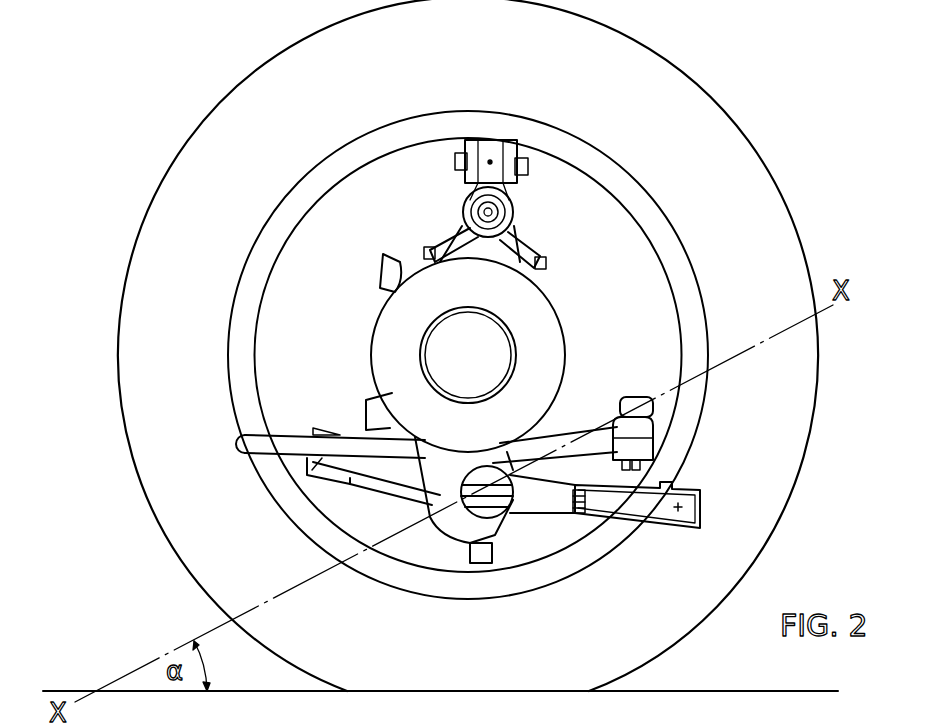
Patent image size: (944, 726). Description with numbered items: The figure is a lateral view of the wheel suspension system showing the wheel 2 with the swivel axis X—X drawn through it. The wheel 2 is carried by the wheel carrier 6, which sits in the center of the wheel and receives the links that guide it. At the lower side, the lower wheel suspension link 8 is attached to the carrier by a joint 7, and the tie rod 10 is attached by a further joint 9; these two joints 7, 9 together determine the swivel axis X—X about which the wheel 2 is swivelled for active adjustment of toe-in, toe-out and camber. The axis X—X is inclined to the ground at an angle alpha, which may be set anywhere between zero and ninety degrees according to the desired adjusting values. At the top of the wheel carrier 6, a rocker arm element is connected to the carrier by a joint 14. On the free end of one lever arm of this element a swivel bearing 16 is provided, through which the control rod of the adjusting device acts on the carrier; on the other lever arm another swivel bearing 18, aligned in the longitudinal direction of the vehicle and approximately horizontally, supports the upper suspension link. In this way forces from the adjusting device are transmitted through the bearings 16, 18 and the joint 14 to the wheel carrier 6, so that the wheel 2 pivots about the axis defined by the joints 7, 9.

The wheel 2 is at (702, 118).
The wheel carrier 6 is at (520, 230).
The joint of the lower wheel suspension link 7 is at (494, 535).
The lower wheel suspension link 8 is at (620, 500).
The joint of the tie rod 9 is at (640, 412).
The tie rod 10 is at (552, 438).
The joint 14 is at (462, 213).
The swivel bearing 16 is at (493, 152).
The swivel bearing 18 is at (547, 259).